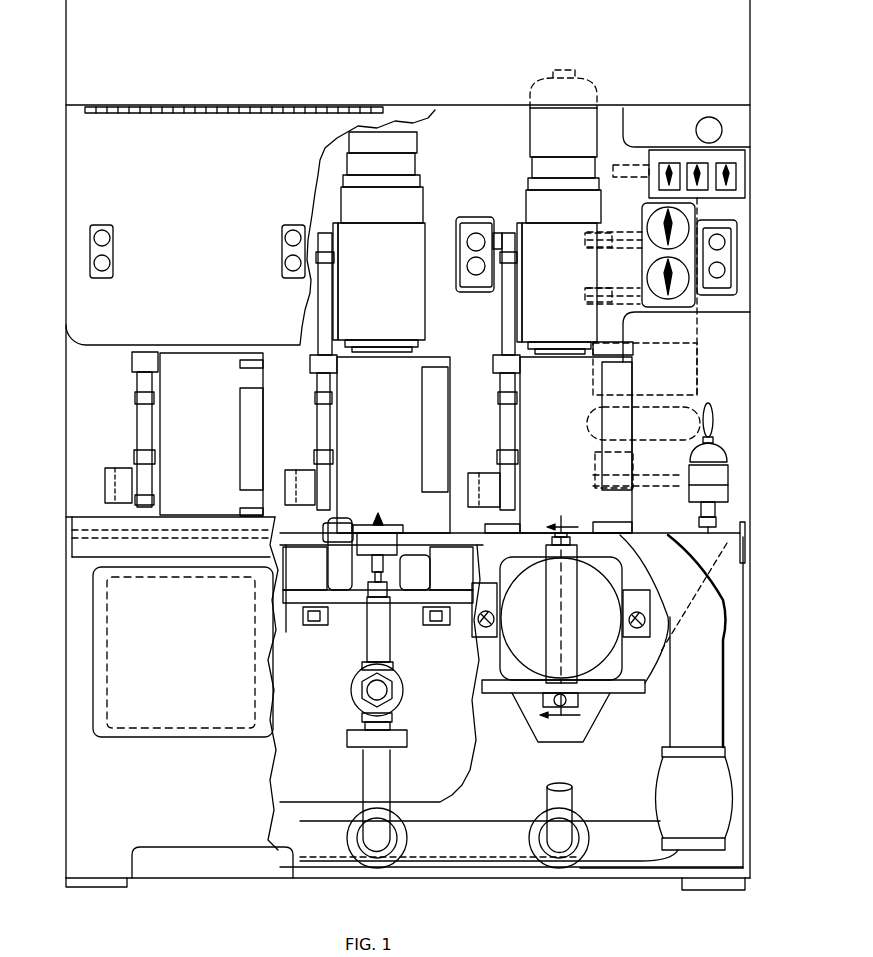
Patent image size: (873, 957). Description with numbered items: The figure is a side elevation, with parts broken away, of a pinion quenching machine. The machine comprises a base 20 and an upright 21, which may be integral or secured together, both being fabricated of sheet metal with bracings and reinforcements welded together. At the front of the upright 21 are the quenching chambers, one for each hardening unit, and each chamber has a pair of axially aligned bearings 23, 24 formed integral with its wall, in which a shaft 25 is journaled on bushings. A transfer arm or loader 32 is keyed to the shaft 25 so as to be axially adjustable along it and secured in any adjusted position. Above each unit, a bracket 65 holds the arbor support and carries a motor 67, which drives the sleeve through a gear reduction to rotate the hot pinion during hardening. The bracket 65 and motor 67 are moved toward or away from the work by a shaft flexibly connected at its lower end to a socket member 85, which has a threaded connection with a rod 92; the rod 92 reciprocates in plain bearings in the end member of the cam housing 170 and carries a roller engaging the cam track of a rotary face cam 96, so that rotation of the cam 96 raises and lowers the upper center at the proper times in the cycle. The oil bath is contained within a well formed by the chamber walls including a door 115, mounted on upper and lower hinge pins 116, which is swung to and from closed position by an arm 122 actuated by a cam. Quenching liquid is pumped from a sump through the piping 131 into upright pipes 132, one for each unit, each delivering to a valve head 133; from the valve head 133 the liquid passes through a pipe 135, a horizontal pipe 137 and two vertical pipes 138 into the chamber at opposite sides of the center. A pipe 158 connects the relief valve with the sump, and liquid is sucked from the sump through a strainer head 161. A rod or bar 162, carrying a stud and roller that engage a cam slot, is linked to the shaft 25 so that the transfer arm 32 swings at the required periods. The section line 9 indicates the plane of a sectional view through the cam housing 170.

The base 20 is at (75, 783).
The upright 21 is at (80, 427).
The bearing 23 is at (132, 366).
The bearing 24 is at (490, 530).
The shaft 25 is at (140, 386).
The transfer arm or loader 32 is at (108, 480).
The bracket 65 is at (408, 306).
The motor 67 is at (405, 133).
The socket member 85 is at (552, 539).
The rod 92 is at (566, 630).
The rotary face cam 96 is at (563, 649).
The section line 9 is at (560, 628).
The door 115 is at (396, 437).
The hinge pins 116 is at (263, 366).
The arm 122 is at (636, 610).
The piping 131 is at (612, 830).
The upright pipes 132 is at (380, 782).
The valve head 133 is at (352, 690).
The pipe 135 is at (383, 645).
The horizontal pipe 137 is at (353, 605).
The vertical pipes 138 is at (337, 571).
The pipe 158 is at (690, 712).
The strainer head 161 is at (728, 804).
The rod or bar 162 is at (482, 608).
The cam housing 170 is at (608, 572).